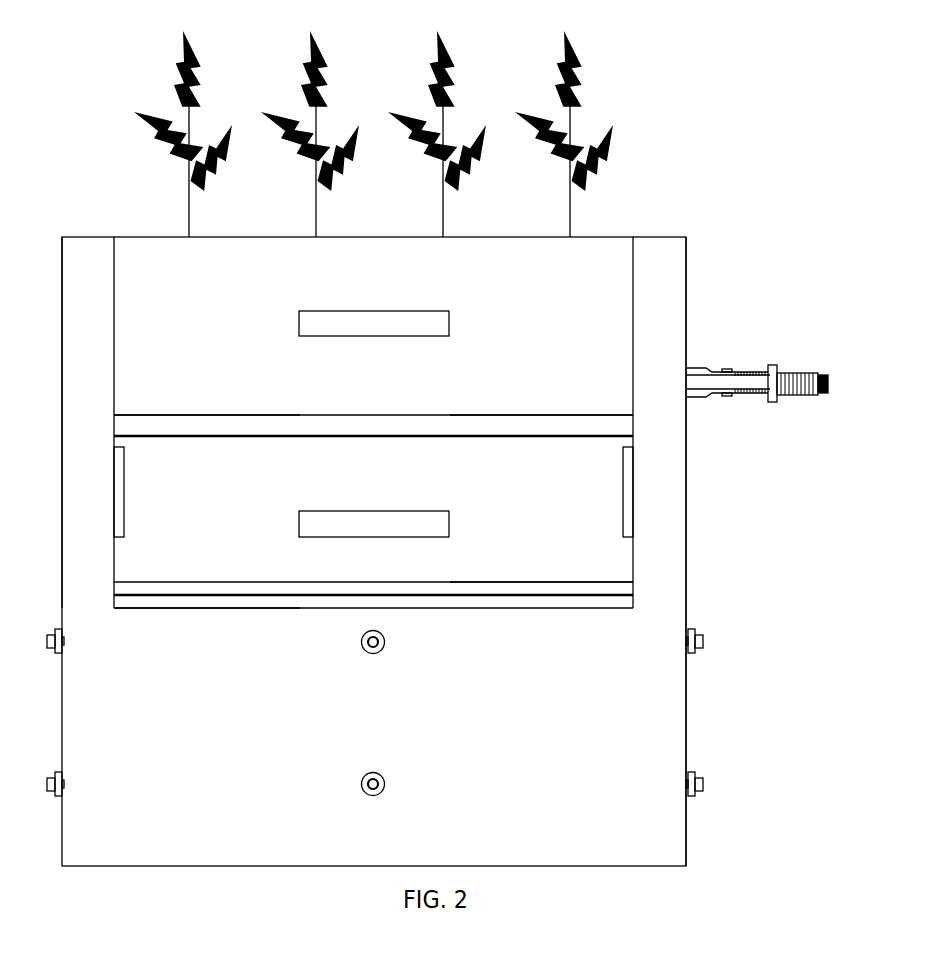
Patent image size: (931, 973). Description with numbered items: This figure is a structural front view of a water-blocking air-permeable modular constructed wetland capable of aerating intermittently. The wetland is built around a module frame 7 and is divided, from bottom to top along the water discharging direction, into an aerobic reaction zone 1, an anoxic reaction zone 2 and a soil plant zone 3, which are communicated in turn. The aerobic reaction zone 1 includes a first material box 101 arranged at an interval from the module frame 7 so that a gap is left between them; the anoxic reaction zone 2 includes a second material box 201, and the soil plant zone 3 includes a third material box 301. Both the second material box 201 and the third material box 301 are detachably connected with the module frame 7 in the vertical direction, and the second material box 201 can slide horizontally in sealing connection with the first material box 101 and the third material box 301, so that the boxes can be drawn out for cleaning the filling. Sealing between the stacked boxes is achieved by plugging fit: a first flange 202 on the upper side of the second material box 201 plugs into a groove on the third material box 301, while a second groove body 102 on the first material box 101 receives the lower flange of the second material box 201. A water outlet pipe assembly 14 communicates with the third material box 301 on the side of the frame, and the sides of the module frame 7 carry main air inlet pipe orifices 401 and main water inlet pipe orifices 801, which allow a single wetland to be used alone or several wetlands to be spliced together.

The aerobic reaction zone 1 is at (452, 582).
The first material box 101 is at (237, 600).
The second groove body 102 is at (519, 593).
The anoxic reaction zone 2 is at (355, 415).
The second material box 201 is at (183, 443).
The first flange 202 is at (470, 426).
The soil plant zone 3 is at (603, 236).
The third material box 301 is at (134, 253).
The module frame 7 is at (676, 257).
The water outlet pipe assembly 14 is at (752, 362).
The main air inlet pipe orifice 401 is at (693, 635).
The main water inlet pipe orifice 801 is at (697, 785).